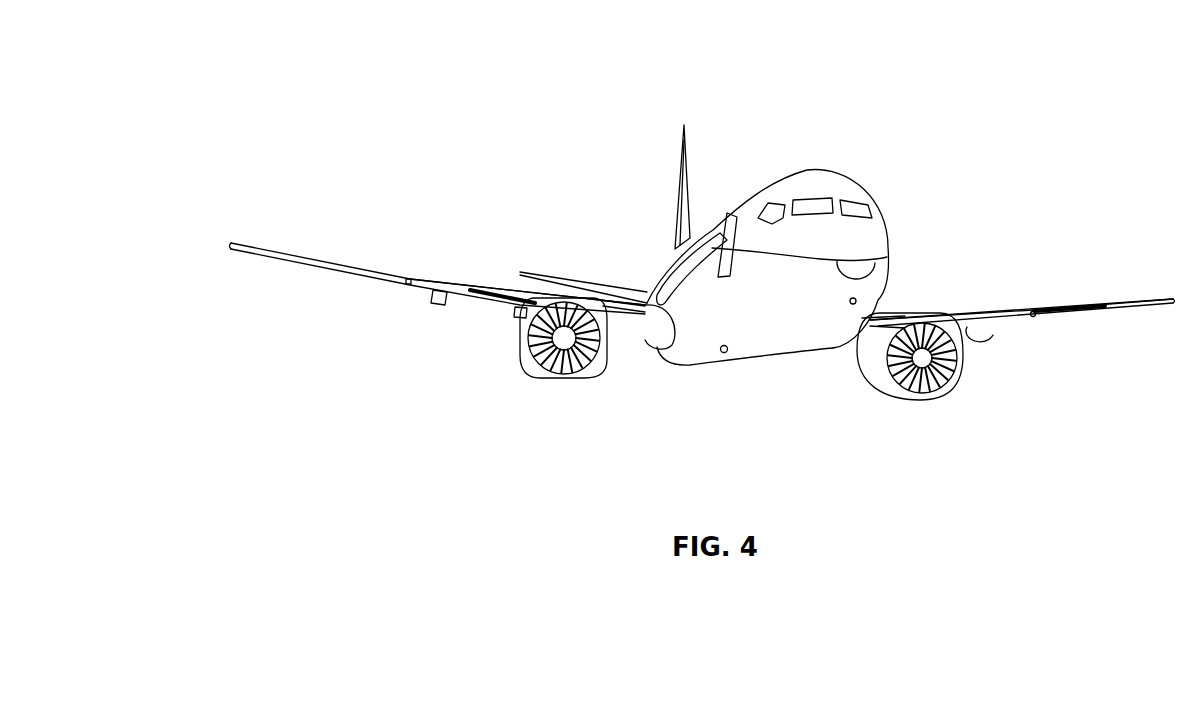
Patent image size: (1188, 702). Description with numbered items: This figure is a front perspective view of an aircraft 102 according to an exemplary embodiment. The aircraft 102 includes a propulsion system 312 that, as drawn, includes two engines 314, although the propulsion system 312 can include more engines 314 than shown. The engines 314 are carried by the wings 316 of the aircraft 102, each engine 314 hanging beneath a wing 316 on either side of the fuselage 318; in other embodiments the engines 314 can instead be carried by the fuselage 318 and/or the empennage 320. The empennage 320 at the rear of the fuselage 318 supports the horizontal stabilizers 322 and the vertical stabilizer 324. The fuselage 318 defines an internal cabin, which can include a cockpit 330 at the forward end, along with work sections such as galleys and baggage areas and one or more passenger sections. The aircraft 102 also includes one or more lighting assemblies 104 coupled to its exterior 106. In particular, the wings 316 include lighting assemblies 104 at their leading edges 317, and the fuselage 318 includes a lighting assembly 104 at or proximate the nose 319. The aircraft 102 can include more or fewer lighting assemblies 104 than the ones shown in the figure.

The aircraft 102 is at (461, 98).
The lighting assembly 104 is at (410, 284).
The exterior 106 is at (723, 353).
The propulsion system 312 is at (980, 399).
The engine 314 is at (563, 380).
The wing 316 is at (360, 268).
The leading edge 317 is at (433, 283).
The fuselage 318 is at (890, 230).
The nose 319 is at (877, 266).
The empennage 320 is at (672, 255).
The horizontal stabilizer 322 is at (552, 274).
The vertical stabilizer 324 is at (680, 162).
The cockpit 330 is at (812, 200).